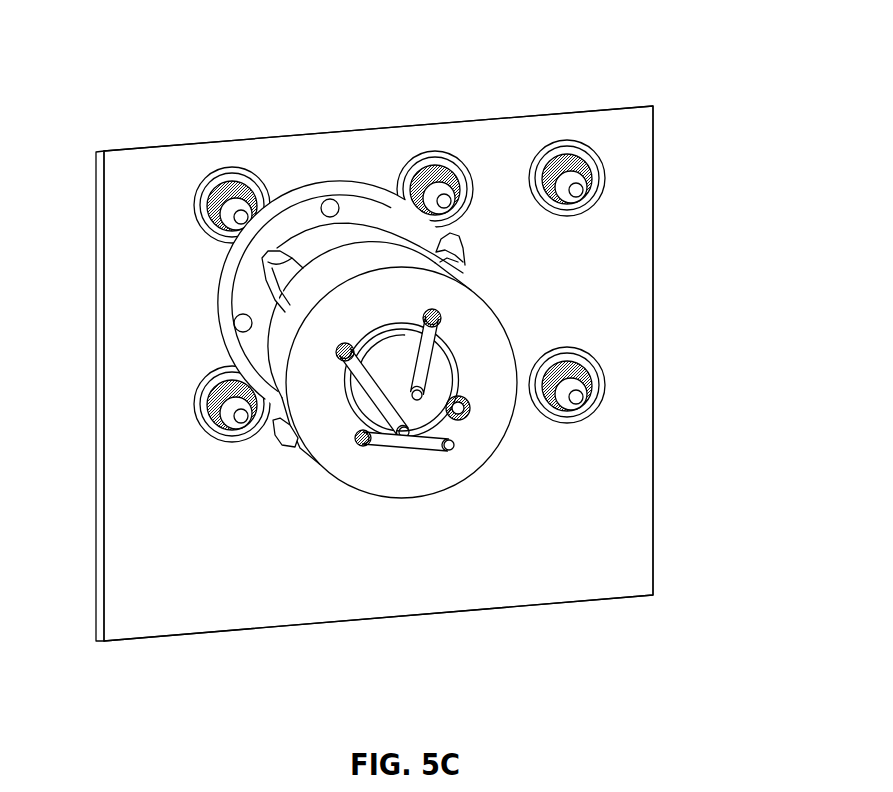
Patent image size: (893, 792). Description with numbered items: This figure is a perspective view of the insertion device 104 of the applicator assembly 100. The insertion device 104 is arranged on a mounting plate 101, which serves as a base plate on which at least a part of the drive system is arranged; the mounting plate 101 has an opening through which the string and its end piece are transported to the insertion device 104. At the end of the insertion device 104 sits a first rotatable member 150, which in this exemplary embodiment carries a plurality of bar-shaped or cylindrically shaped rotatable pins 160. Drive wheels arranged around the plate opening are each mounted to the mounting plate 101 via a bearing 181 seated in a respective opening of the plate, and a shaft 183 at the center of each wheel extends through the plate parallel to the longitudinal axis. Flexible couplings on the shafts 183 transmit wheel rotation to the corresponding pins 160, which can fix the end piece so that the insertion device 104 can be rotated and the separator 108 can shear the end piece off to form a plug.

The applicator assembly 100 is at (663, 120).
The mounting plate 101 is at (659, 212).
The insertion device 104 is at (280, 459).
The separator 108 is at (304, 481).
The first rotatable member 150 is at (361, 503).
The rotatable pins 160 is at (428, 446).
The bearing 181 is at (211, 169).
The shaft 183 is at (231, 434).